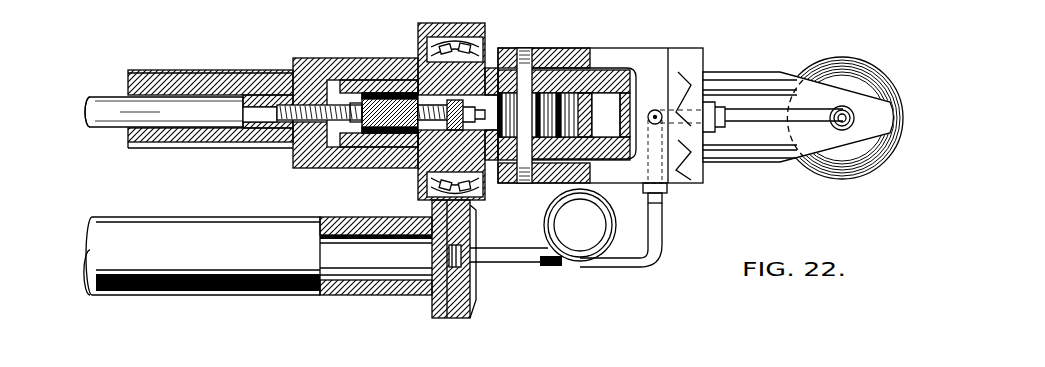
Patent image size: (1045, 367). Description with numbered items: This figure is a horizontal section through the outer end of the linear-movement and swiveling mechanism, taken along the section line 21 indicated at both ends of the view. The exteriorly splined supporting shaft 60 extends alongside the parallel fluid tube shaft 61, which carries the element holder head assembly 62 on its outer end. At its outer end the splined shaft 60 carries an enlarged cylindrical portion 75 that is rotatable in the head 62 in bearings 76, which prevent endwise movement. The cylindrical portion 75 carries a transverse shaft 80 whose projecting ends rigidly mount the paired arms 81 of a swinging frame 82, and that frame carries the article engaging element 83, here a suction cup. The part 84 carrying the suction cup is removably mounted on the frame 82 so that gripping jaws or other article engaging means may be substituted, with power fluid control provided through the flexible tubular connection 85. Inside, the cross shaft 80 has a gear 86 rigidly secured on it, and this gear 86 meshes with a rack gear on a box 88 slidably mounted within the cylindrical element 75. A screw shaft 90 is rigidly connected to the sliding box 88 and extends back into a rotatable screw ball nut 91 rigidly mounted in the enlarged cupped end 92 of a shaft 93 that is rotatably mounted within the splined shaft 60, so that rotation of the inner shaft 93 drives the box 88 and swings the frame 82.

The section line 21 is at (128, 108).
The splined supporting rod or shaft 60 is at (210, 94).
The fluid rod, tube, or shaft 61 is at (328, 296).
The element holder head assembly 62 is at (476, 46).
The enlarged cylindrical portion 75 is at (490, 60).
The bearings 76 is at (438, 40).
The transverse shaft 80 is at (536, 52).
The paired arms 81 is at (632, 49).
The swinging frame 82 is at (745, 65).
The article engaging element 83 is at (866, 64).
The part carrying the suction cup 84 is at (692, 53).
The flexible tubular connection 85 is at (611, 266).
The gear 86 is at (554, 178).
The box 88 is at (590, 98).
The screw shaft 90 is at (286, 122).
The rotatable screw ball nut 91 is at (378, 96).
The enlarged cupped end 92 is at (346, 82).
The shaft 93 is at (226, 117).